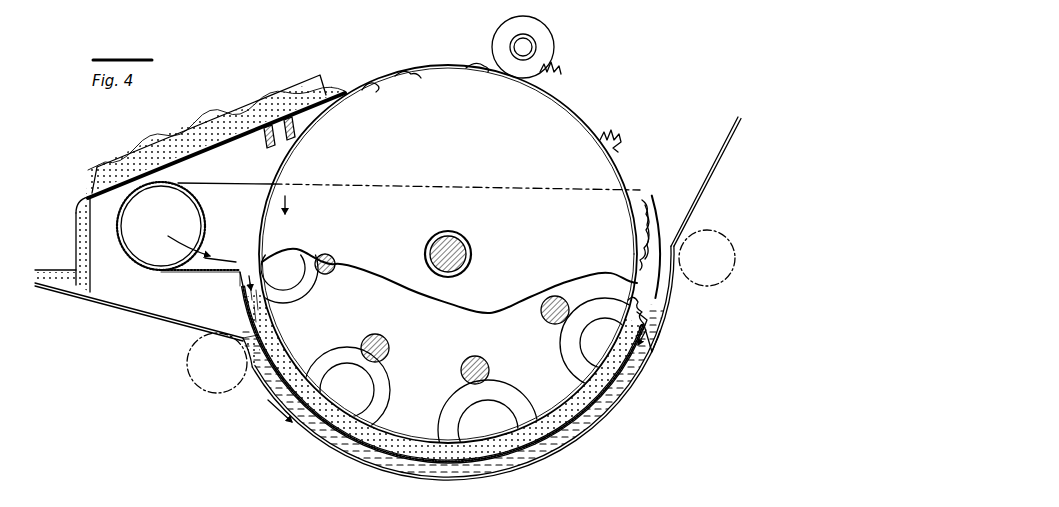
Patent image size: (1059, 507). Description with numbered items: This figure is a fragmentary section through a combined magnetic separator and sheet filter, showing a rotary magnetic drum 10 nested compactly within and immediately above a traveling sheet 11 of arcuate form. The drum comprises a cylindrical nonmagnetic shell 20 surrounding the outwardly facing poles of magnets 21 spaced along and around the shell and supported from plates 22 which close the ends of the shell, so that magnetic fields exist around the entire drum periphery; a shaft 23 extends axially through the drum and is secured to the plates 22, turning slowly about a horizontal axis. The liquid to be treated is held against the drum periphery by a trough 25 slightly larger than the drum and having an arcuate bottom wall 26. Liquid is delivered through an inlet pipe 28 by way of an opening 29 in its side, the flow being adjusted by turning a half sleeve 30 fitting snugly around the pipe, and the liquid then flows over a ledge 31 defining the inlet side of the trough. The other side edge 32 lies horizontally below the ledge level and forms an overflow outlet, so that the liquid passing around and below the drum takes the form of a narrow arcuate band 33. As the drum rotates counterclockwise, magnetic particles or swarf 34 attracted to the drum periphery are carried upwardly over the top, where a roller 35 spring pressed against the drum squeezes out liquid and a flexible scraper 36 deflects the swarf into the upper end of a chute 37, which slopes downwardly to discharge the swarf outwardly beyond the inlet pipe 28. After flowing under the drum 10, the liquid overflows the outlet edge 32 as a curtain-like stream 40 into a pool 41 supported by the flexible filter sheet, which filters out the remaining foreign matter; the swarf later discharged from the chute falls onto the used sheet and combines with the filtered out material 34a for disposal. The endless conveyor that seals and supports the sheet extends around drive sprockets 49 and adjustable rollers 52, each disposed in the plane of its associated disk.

The rotary magnetic drum 10 is at (584, 121).
The traveling sheet 11 is at (667, 305).
The cylindrical nonmagnetic shell 20 is at (584, 416).
The magnets 21 is at (300, 297).
The plates 22 is at (494, 304).
The shaft 23 is at (472, 258).
The trough 25 is at (569, 431).
The arcuate bottom wall 26 is at (558, 446).
The inlet pipe 28 is at (140, 264).
The opening 29 is at (208, 250).
The half sleeve 30 is at (205, 212).
The ledge 31 is at (238, 278).
The side edge 32 is at (645, 333).
The arcuate band 33 is at (507, 460).
The swarf 34 is at (556, 82).
The filtered out material 34a is at (150, 307).
The roller 35 is at (553, 47).
The flexible scraper 36 is at (350, 96).
The chute 37 is at (290, 88).
The curtain-like stream 40 is at (651, 360).
The pool 41 is at (407, 472).
The drive sprockets 49 is at (190, 382).
The adjustable rollers 52 is at (728, 240).